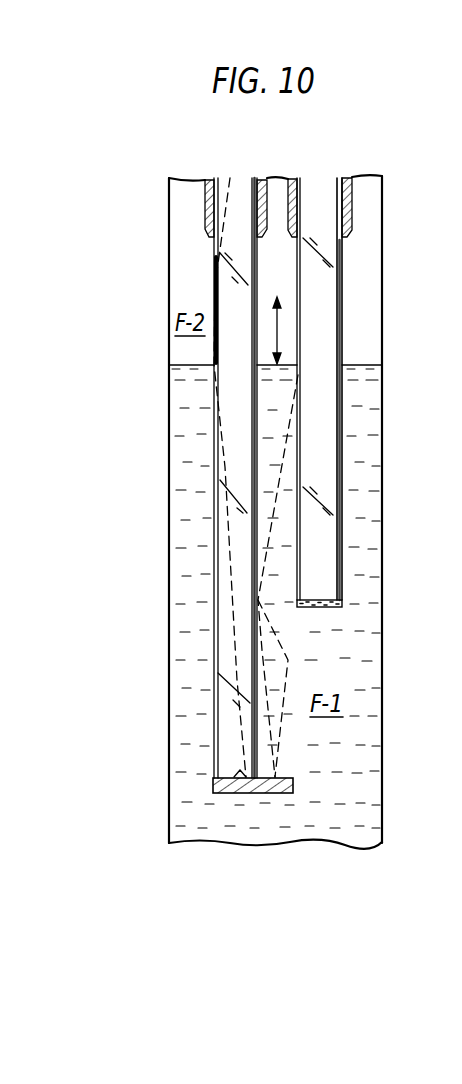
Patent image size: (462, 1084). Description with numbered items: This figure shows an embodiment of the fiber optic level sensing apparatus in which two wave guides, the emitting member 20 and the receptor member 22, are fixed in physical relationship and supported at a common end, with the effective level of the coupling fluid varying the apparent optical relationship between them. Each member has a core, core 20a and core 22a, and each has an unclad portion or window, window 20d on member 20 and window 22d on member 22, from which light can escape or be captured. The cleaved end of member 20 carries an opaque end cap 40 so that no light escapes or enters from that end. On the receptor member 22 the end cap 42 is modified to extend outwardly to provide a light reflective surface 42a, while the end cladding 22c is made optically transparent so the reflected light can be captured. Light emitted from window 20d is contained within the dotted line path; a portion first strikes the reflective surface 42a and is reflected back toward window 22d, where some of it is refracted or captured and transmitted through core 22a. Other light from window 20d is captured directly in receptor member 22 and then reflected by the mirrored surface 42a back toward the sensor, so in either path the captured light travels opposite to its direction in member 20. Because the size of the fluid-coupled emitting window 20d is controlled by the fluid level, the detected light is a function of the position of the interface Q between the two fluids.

The wave guide member 20 is at (320, 185).
The core 20a is at (345, 203).
The window 20d is at (342, 290).
The receptor member 22 is at (240, 184).
The core 22a is at (210, 205).
The end cladding 22c is at (209, 674).
The window 22d is at (213, 273).
The end cap 40 is at (328, 608).
The end cap 42 is at (252, 793).
The reflective surface 42a is at (240, 774).
The interface Q is at (365, 365).